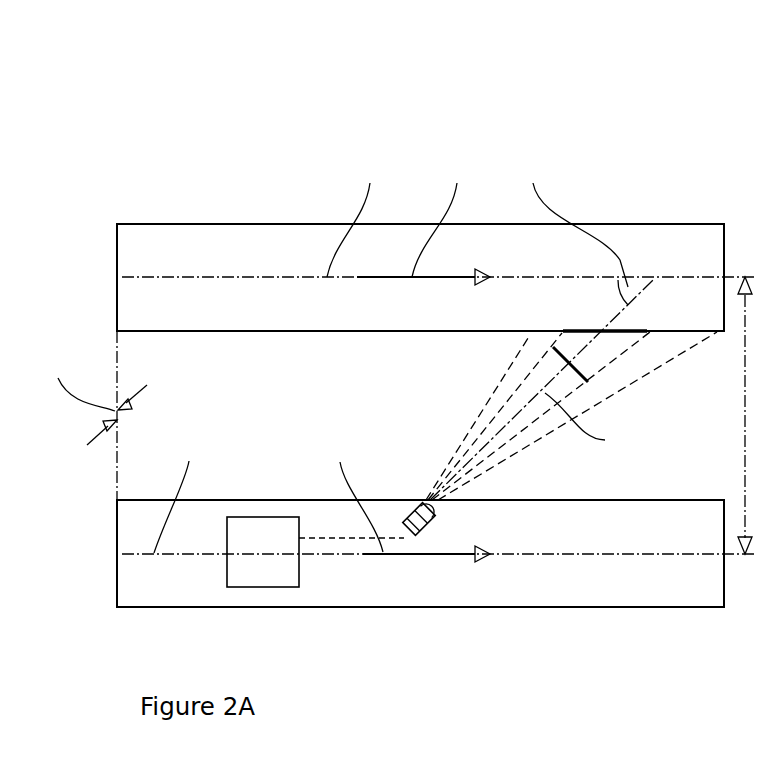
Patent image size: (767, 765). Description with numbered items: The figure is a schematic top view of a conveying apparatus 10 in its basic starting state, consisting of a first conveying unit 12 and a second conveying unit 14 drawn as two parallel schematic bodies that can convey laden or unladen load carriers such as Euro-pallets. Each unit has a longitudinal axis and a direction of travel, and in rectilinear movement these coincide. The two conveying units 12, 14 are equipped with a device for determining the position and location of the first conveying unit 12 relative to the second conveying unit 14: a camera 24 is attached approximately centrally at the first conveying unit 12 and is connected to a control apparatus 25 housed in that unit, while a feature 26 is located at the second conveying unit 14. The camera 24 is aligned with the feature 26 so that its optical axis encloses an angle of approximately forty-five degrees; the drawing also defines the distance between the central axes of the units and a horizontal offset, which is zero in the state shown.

The conveying apparatus 10 is at (175, 133).
The second conveying unit 14 is at (255, 224).
The first conveying unit 12 is at (211, 500).
The control apparatus 25 is at (272, 517).
The camera 24 is at (408, 506).
The feature 26 is at (616, 331).